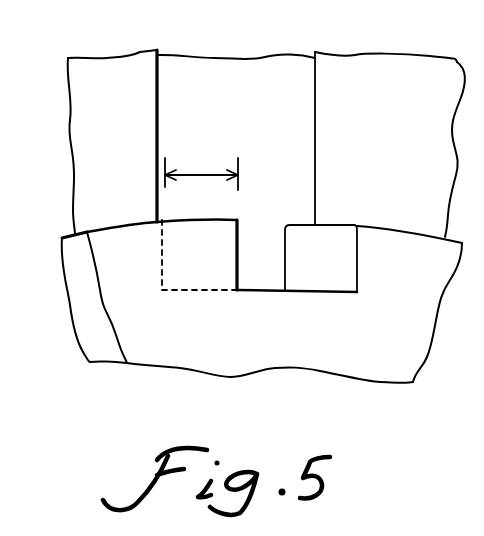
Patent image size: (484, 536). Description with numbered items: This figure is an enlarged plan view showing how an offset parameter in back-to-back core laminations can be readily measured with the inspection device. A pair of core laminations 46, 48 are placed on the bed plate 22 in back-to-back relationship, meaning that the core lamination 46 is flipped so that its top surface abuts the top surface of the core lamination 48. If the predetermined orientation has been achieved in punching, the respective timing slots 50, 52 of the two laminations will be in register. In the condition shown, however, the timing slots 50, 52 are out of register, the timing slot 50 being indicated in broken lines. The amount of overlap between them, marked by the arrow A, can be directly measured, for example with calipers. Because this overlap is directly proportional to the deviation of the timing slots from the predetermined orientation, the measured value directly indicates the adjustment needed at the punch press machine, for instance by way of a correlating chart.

The bed plate 22 is at (112, 72).
The core lamination 46 is at (98, 343).
The core lamination 48 is at (180, 352).
The timing slot 50 is at (200, 278).
The timing slot 52 is at (356, 280).